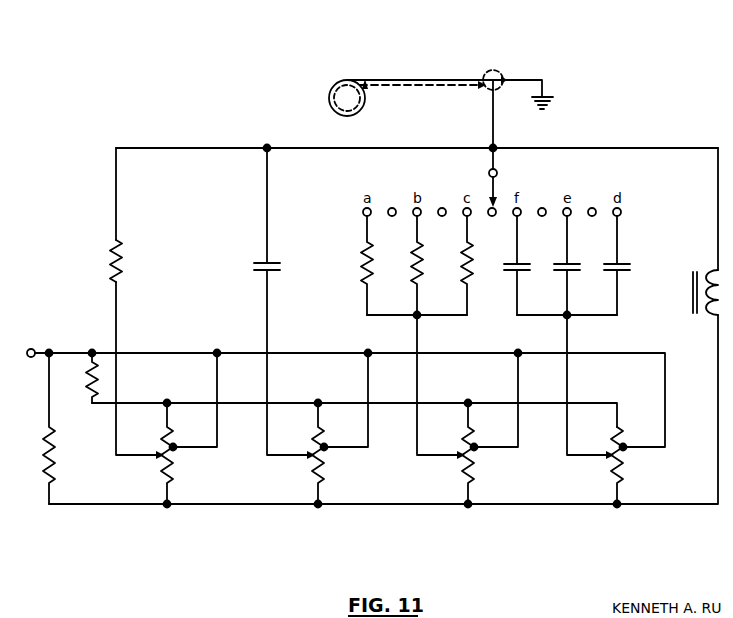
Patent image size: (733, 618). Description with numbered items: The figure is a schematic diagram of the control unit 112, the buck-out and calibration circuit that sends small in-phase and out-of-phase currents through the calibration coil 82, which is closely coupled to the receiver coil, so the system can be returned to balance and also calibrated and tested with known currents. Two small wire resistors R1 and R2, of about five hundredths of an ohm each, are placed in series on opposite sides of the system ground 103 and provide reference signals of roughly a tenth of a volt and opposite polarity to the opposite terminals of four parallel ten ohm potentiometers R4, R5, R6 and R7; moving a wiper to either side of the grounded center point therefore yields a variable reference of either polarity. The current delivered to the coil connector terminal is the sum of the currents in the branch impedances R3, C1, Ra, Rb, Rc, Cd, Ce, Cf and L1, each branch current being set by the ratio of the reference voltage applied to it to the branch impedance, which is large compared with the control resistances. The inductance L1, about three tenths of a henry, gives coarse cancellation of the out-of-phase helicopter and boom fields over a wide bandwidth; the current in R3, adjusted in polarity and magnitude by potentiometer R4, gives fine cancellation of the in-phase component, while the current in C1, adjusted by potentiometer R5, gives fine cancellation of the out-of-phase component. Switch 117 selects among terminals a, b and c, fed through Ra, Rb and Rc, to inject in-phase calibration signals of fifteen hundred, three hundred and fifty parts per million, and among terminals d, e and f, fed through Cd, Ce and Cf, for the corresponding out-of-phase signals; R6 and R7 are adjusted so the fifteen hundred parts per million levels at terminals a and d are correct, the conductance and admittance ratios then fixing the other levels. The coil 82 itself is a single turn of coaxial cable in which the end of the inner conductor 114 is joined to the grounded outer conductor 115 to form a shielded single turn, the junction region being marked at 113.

The calibration coil 82 is at (350, 66).
The control unit 112 is at (225, 134).
The connection point 113 is at (500, 74).
The inner conductor 114 is at (405, 80).
The outer conductor 115 is at (420, 87).
The switch 117 is at (497, 188).
The system ground 103 is at (33, 349).
The wire resistor R1 is at (80, 378).
The wire resistor R2 is at (60, 428).
The branch resistance R3 is at (127, 261).
The potentiometer R4 is at (178, 455).
The potentiometer R5 is at (328, 455).
The potentiometer R6 is at (478, 455).
The potentiometer R7 is at (628, 467).
The calibration resistor Ra is at (378, 265).
The calibration resistor Rb is at (428, 265).
The calibration resistor Rc is at (478, 265).
The capacitor C1 is at (277, 270).
The calibration capacitor Cf is at (521, 265).
The calibration capacitor Ce is at (572, 265).
The calibration capacitor Cd is at (622, 265).
The inductance L1 is at (691, 292).